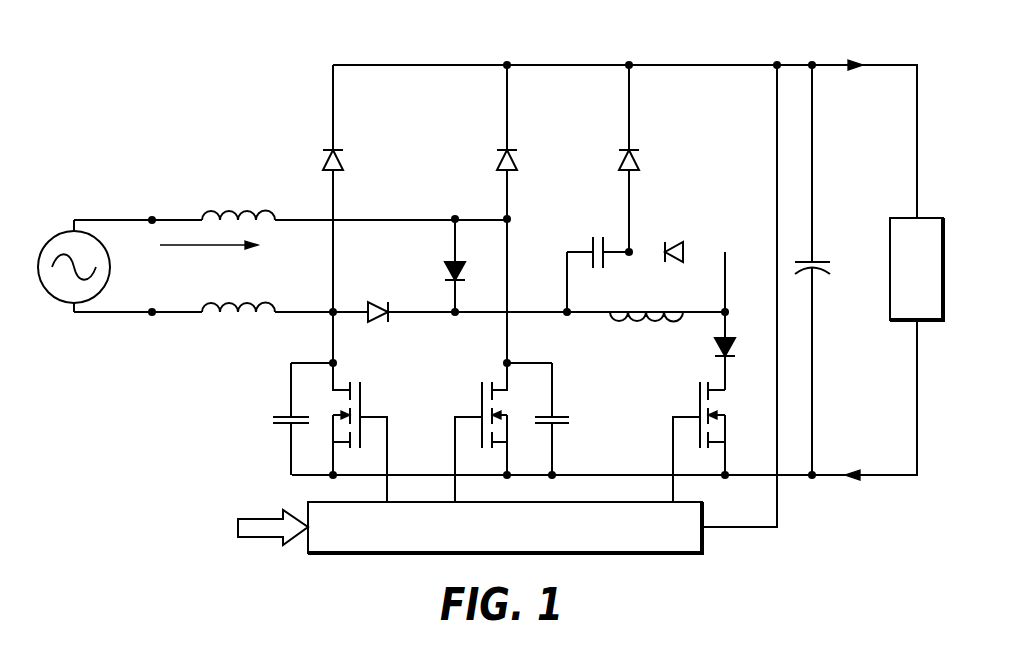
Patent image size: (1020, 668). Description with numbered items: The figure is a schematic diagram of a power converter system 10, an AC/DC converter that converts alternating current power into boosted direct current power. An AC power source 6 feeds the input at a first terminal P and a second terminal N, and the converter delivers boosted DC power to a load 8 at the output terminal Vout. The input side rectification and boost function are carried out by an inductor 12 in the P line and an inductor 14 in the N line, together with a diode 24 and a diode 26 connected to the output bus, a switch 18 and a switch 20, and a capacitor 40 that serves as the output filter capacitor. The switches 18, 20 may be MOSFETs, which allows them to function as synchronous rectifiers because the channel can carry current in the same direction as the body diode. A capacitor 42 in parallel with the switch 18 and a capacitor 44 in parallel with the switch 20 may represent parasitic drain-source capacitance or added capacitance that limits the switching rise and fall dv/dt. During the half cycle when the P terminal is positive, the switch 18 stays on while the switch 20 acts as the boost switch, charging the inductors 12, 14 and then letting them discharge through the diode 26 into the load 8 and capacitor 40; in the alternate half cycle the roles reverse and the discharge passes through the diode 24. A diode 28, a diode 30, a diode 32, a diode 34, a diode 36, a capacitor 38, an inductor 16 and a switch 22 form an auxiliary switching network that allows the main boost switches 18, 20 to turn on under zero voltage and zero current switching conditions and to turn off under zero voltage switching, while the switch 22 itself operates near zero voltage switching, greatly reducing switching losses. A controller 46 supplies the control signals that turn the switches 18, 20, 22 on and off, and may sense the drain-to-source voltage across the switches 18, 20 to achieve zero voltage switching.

The AC power source 6 is at (54, 298).
The load 8 is at (890, 229).
The power converter system 10 is at (230, 38).
The inductor 12 is at (247, 201).
The inductor 14 is at (265, 296).
The inductor 16 is at (612, 321).
The switch 18 is at (367, 412).
The switch 20 is at (482, 406).
The switch 22 is at (728, 422).
The diode 24 is at (345, 158).
The diode 26 is at (519, 158).
The diode 28 is at (641, 158).
The diode 30 is at (373, 302).
The diode 32 is at (453, 262).
The diode 34 is at (683, 243).
The diode 36 is at (716, 343).
The capacitor 38 is at (593, 246).
The capacitor 40 is at (832, 271).
The capacitor 42 is at (281, 416).
The capacitor 44 is at (567, 416).
The controller 46 is at (667, 553).